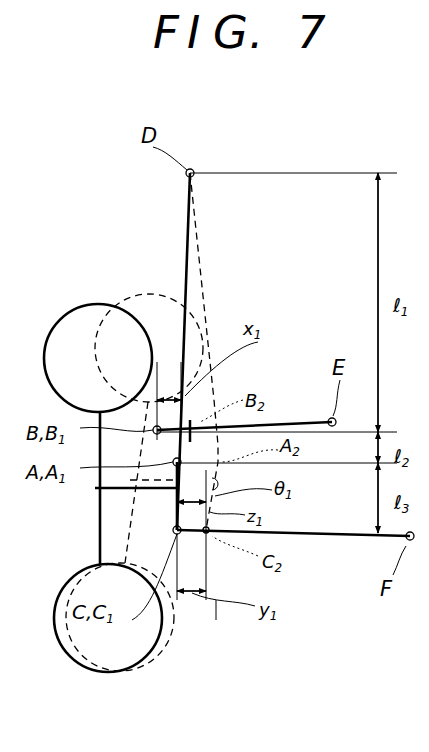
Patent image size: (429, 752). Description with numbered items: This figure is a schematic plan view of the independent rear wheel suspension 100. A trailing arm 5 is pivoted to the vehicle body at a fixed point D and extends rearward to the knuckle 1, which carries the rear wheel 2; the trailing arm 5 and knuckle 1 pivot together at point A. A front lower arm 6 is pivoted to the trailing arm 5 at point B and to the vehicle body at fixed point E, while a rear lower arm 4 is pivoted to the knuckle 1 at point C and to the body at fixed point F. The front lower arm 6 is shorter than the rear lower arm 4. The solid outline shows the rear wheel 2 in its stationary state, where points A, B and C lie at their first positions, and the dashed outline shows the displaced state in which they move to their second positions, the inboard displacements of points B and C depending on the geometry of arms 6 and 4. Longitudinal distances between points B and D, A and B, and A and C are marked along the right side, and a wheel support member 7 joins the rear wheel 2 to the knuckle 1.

The knuckle 1 is at (176, 505).
The rear wheel 2 is at (68, 306).
The rear lower arm 4 is at (331, 540).
The trailing arm 5 is at (183, 232).
The front lower arm 6 is at (292, 421).
The wheel support shaft 7 is at (116, 490).
The independent rear wheel suspension 100 is at (216, 620).